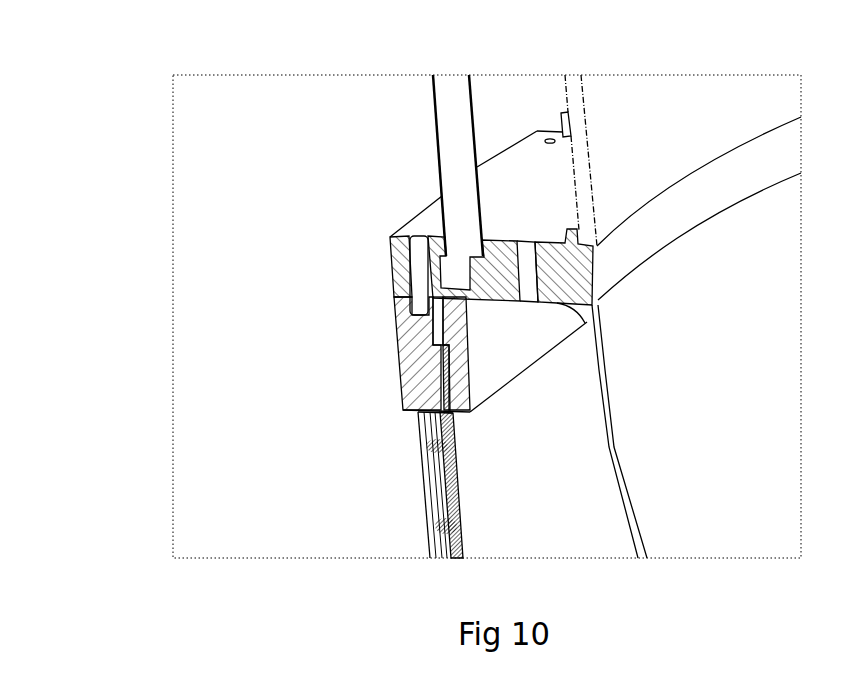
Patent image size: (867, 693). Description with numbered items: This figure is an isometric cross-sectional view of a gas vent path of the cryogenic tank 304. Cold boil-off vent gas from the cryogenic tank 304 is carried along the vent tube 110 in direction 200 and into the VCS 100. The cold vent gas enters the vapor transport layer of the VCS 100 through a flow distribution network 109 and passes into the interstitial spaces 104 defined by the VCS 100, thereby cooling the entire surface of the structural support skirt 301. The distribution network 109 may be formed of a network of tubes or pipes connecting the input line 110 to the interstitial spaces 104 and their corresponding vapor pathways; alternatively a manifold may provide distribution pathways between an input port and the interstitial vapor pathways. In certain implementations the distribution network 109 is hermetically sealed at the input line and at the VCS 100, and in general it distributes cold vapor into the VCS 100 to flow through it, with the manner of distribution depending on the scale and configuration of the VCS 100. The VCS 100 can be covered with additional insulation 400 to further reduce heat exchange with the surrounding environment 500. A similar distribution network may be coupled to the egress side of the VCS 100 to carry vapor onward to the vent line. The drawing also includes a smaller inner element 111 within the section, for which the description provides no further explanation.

The VCS 100 is at (447, 533).
The interstitial spaces 104 is at (443, 413).
The flow distribution network 109 is at (405, 375).
The vent tube 110 is at (430, 88).
The inner rod 111 is at (438, 326).
The direction 200 is at (405, 103).
The structural support skirt 301 is at (455, 452).
The cryogenic tank 304 is at (572, 88).
The insulation 400 is at (418, 502).
The surrounding environment 500 is at (134, 157).